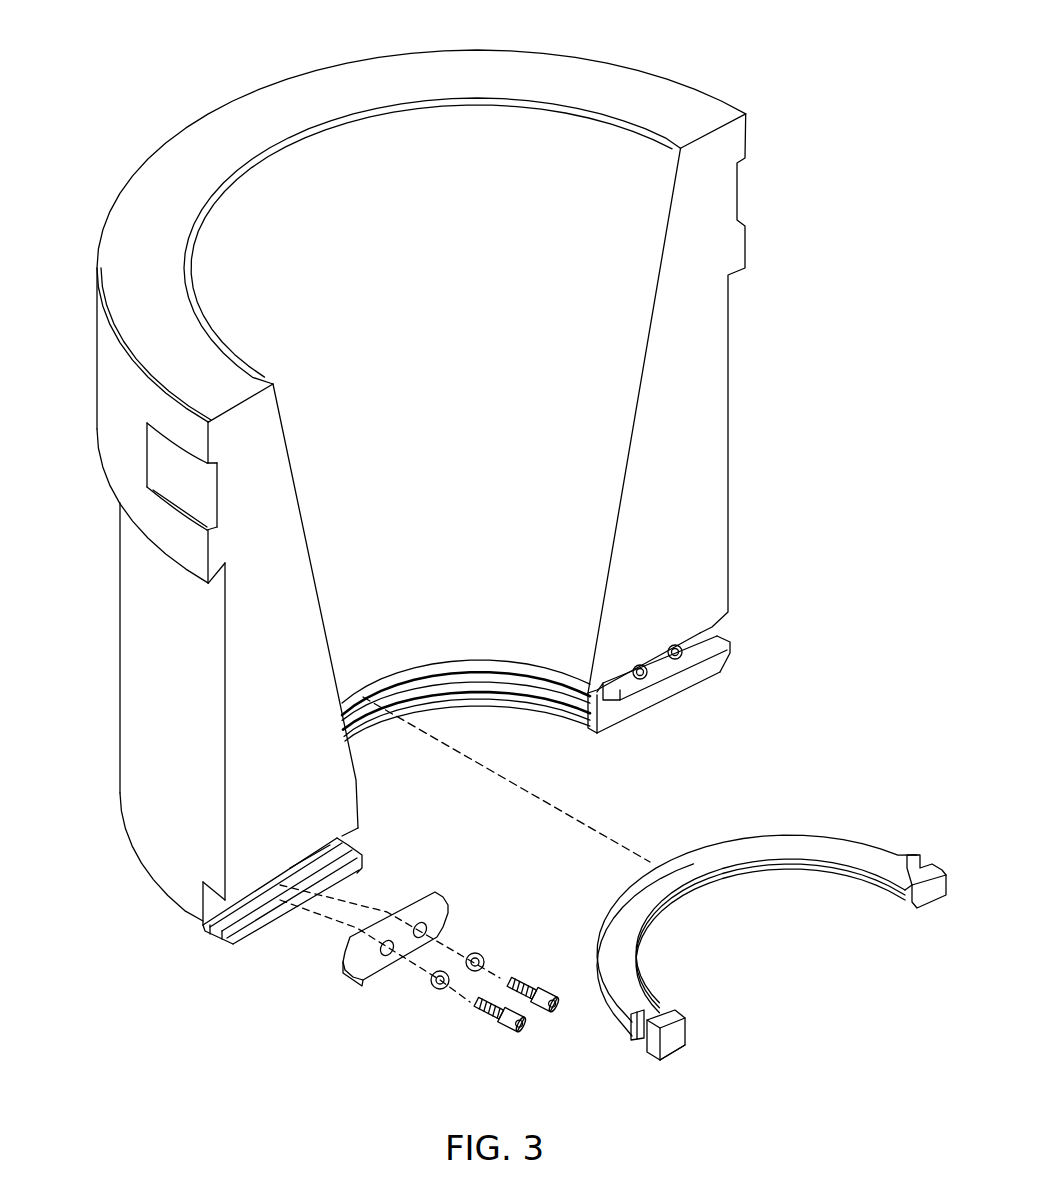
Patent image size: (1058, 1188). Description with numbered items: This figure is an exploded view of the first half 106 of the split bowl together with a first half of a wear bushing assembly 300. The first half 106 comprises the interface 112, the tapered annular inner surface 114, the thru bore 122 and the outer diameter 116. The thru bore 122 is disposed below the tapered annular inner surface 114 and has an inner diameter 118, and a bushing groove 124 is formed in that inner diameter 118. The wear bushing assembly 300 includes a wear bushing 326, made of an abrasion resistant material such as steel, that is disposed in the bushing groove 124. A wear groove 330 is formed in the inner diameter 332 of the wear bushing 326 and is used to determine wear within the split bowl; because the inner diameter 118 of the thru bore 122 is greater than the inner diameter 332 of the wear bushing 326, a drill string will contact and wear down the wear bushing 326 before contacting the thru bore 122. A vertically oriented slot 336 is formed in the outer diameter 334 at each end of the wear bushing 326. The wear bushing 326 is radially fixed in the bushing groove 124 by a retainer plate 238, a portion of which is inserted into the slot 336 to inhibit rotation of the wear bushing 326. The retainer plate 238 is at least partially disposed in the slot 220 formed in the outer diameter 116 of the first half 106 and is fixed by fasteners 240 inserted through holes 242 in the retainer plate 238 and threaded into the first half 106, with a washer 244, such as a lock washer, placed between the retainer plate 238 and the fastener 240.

The first half 106 is at (790, 54).
The interface 112 is at (690, 470).
The tapered annular inner surface 114 is at (601, 182).
The outer diameter 116 is at (140, 705).
The inner diameter 118 is at (530, 706).
The thru bore 122 is at (360, 798).
The bushing groove 124 is at (600, 708).
The slot 220 is at (196, 905).
The retainer plate 238 is at (455, 905).
The fastener 240 is at (515, 1032).
The holes 242 is at (386, 957).
The washer 244 is at (441, 990).
The wear bushing assembly 300 is at (863, 737).
The wear bushing 326 is at (692, 1072).
The wear groove 330 is at (893, 900).
The inner diameter 332 is at (798, 882).
The outer diameter 334 is at (805, 834).
The slot 336 is at (638, 1054).